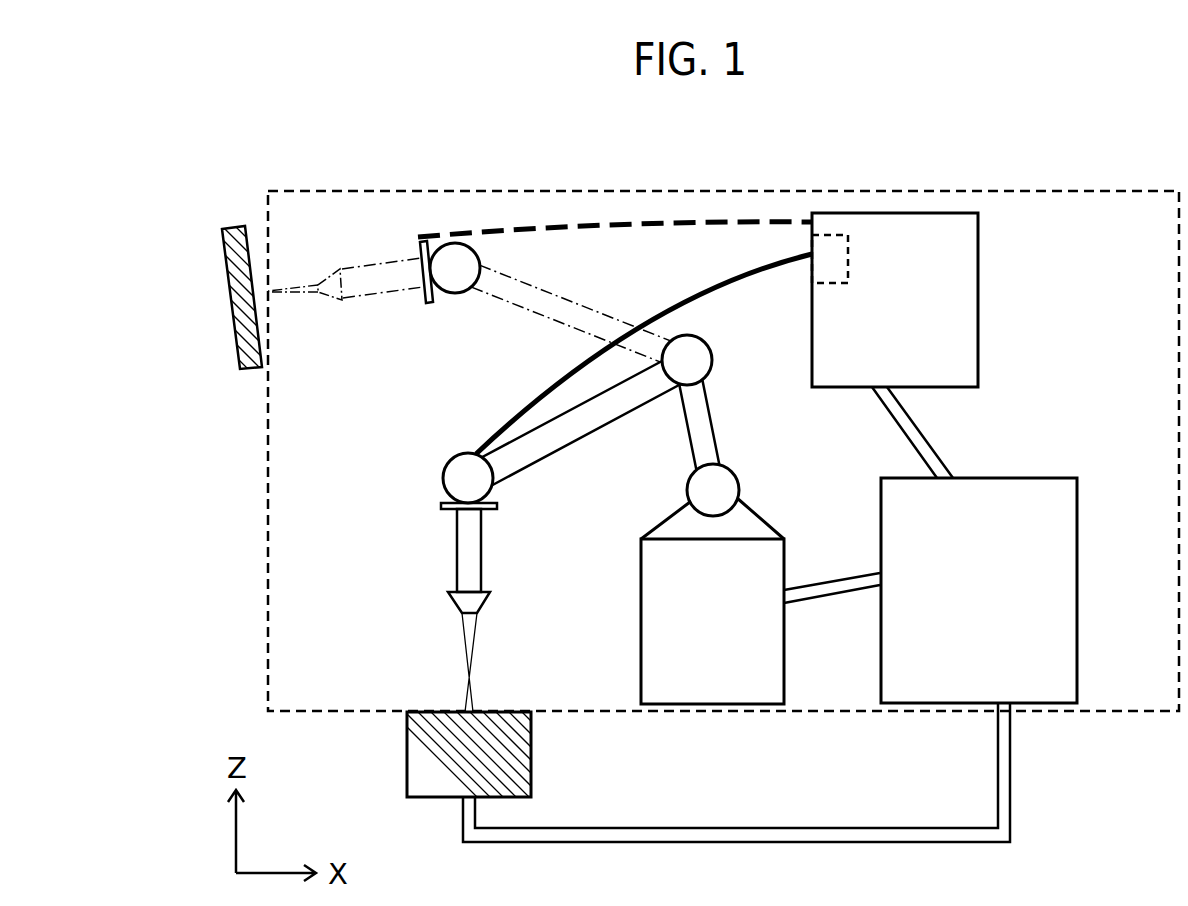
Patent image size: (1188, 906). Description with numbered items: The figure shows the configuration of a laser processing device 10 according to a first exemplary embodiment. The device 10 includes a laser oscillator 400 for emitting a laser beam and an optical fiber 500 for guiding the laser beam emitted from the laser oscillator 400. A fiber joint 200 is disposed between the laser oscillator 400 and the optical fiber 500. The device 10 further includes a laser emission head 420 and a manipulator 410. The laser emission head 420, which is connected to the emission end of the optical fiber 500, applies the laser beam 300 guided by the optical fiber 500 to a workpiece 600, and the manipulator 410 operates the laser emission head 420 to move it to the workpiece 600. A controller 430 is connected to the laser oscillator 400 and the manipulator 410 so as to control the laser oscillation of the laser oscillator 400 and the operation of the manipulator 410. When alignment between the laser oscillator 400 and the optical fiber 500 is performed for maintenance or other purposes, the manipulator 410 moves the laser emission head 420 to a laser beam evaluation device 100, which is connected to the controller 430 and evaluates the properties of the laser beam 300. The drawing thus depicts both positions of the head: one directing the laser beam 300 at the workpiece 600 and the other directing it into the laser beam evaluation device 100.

The laser processing device 10 is at (1055, 190).
The laser beam evaluation device 100 is at (407, 753).
The fiber joint 200 is at (810, 272).
The laser beam 300 is at (463, 640).
The laser oscillator 400 is at (979, 298).
The manipulator 410 is at (753, 512).
The laser emission head 420 is at (457, 543).
The controller 430 is at (1078, 508).
The optical fiber 500 is at (517, 399).
The workpiece 600 is at (240, 363).